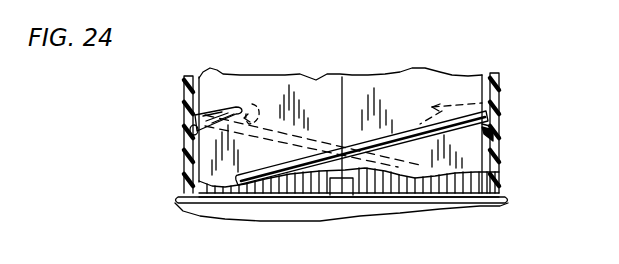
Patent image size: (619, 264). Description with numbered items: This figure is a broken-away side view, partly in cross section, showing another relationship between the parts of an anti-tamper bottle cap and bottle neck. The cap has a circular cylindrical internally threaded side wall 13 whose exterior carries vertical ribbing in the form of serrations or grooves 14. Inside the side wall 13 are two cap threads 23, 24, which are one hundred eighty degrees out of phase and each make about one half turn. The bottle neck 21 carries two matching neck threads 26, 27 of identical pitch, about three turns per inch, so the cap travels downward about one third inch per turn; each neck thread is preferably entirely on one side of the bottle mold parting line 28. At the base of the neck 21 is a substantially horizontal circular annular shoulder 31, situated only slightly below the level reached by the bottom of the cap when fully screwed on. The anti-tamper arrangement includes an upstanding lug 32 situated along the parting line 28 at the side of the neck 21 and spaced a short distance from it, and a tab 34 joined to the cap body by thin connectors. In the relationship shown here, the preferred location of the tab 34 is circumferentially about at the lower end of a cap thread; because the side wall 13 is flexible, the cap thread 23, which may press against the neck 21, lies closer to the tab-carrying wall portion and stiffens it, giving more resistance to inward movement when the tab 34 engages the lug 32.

The side wall 13 is at (185, 89).
The serrations or grooves 14 is at (218, 192).
The neck 21 is at (217, 92).
The cap thread 23 is at (491, 129).
The cap thread 24 is at (188, 126).
The neck thread 26 is at (412, 129).
The neck thread 27 is at (246, 110).
The bottle mold parting line 28 is at (318, 78).
The shoulder 31 is at (175, 200).
The lug 32 is at (339, 190).
The tab 34 is at (277, 193).